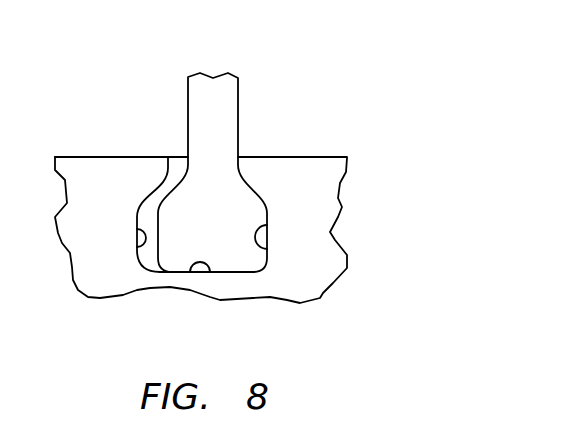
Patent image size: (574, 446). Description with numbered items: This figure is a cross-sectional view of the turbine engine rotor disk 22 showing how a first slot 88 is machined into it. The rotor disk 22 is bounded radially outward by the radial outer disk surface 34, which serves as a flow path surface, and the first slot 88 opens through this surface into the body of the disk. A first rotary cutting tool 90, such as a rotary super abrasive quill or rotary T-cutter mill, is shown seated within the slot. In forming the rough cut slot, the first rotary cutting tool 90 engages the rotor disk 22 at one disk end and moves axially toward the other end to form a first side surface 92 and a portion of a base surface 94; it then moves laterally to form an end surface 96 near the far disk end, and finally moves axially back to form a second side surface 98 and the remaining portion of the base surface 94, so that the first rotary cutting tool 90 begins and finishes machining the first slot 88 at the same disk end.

The turbine engine rotor disk 22 is at (343, 110).
The radial outer disk surface 34 is at (287, 157).
The first slot 88 is at (150, 188).
The first rotary cutting tool 90 is at (213, 76).
The first side surface 92 is at (137, 232).
The base surface 94 is at (193, 276).
The end surface 96 is at (153, 260).
The second side surface 98 is at (267, 225).